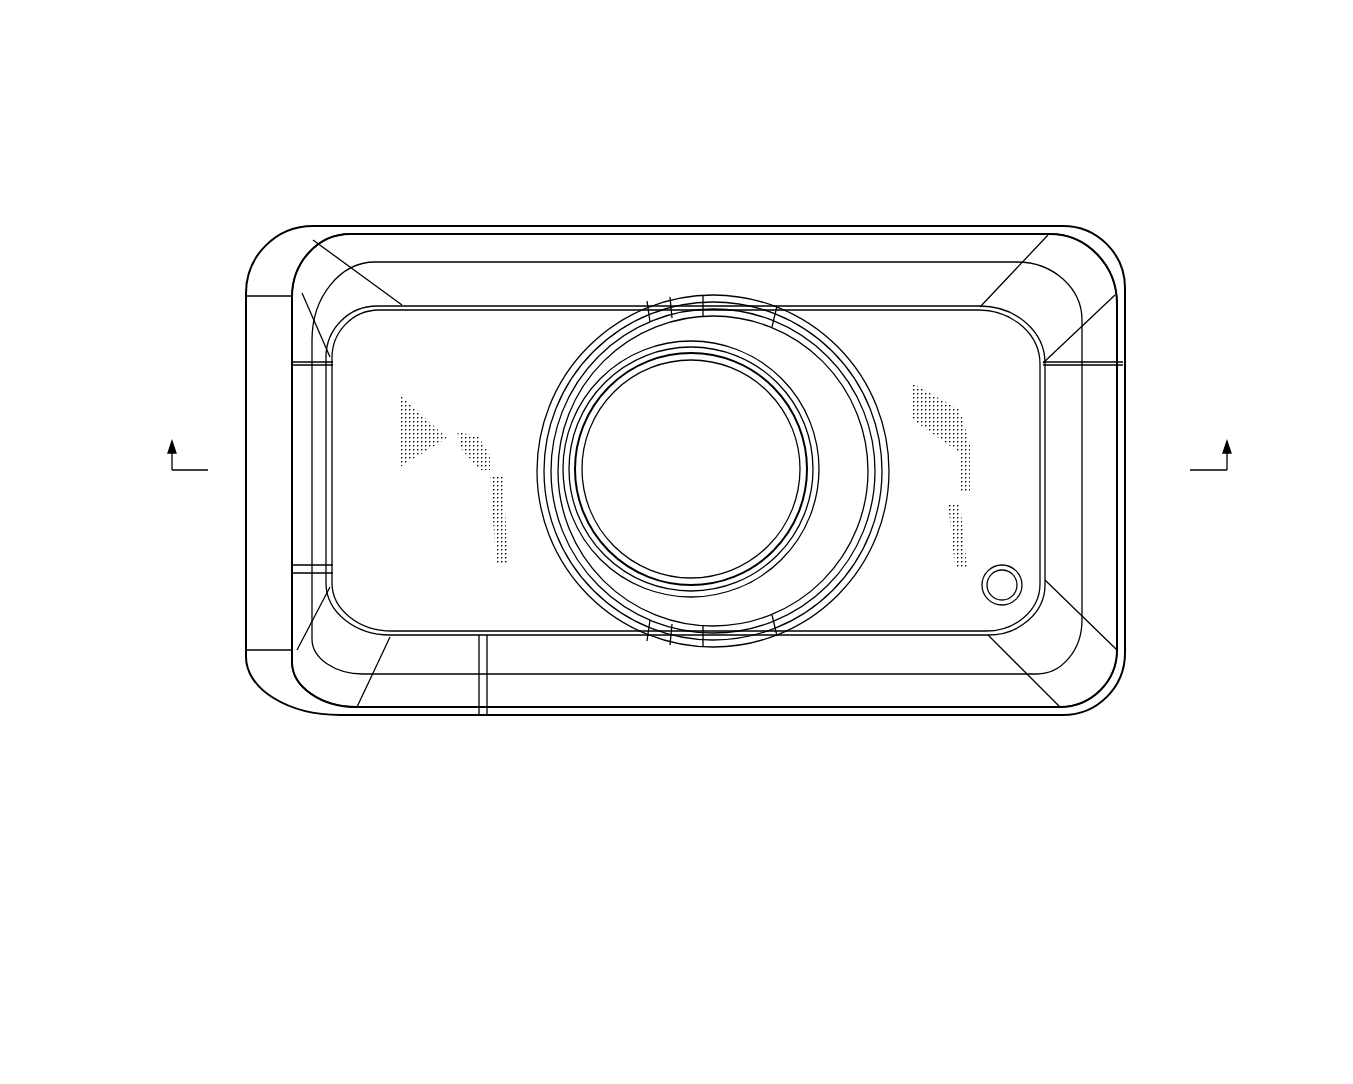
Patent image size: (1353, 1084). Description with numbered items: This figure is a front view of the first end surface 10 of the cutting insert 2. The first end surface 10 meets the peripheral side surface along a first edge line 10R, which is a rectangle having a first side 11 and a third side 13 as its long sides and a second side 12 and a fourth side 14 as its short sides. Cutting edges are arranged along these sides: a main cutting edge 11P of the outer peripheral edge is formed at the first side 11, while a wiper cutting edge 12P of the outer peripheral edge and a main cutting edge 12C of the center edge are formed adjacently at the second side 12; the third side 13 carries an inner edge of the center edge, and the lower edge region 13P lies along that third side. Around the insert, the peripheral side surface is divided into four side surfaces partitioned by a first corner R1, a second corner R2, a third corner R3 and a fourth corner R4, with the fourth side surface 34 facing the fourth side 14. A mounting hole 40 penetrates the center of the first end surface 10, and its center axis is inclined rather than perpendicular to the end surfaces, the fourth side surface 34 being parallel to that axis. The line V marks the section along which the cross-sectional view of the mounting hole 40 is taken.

The cutting insert 2 is at (682, 870).
The first end surface 10 is at (470, 340).
The first edge line 10R is at (965, 218).
The first side 11 is at (700, 159).
The main cutting edge 11P is at (658, 225).
The second side 12 is at (1275, 293).
The wiper cutting edge 12P is at (1123, 318).
The main cutting edge 12C is at (1123, 402).
The third side 13 is at (708, 763).
The lower side surface 13P is at (745, 718).
The fourth side 14 is at (287, 415).
The fourth side surface 34 is at (262, 608).
The mounting hole 40 is at (797, 373).
The first corner R1 is at (1090, 243).
The second corner R2 is at (1117, 690).
The third corner R3 is at (303, 692).
The fourth corner R4 is at (310, 248).
The line V- V is at (701, 438).